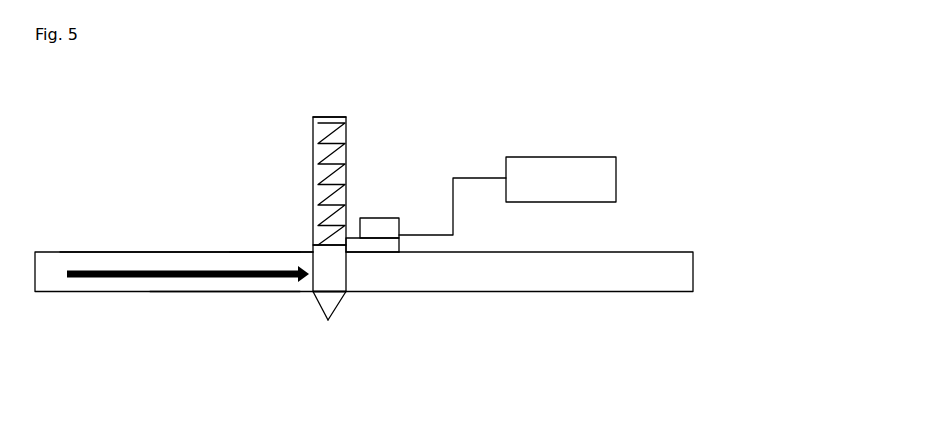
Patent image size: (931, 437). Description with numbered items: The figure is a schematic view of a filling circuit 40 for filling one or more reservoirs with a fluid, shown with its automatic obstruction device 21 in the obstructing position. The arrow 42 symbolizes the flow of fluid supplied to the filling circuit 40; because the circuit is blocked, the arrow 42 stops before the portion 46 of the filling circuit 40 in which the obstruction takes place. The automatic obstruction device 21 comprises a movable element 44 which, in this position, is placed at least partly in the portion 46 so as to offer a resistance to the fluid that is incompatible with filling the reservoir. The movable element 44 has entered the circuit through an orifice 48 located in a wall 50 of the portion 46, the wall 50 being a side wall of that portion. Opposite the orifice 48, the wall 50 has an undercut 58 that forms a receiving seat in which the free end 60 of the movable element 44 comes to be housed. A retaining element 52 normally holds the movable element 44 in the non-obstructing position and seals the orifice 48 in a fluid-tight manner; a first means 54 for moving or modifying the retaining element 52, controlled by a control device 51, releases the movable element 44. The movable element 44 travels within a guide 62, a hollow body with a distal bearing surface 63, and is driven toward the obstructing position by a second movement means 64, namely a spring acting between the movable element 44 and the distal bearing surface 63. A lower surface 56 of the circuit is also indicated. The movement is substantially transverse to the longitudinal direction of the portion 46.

The automatic obstruction device 21 is at (313, 247).
The filling circuit 40 is at (202, 232).
The arrow 42 is at (260, 252).
The movable element 44 is at (344, 292).
The portion of the filling circuit 46 is at (322, 262).
The orifice 48 is at (347, 213).
The wall 50 is at (153, 252).
The control device 51 is at (624, 178).
The retaining element 52 is at (362, 253).
The first means for moving or modifying the retaining element 54 is at (383, 231).
The lower surface 56 is at (214, 291).
The undercut 58 is at (317, 294).
The free end 60 is at (333, 303).
The guide 62 is at (313, 143).
The distal bearing surface 63 is at (329, 117).
The second means for moving the movable element 64 is at (346, 143).